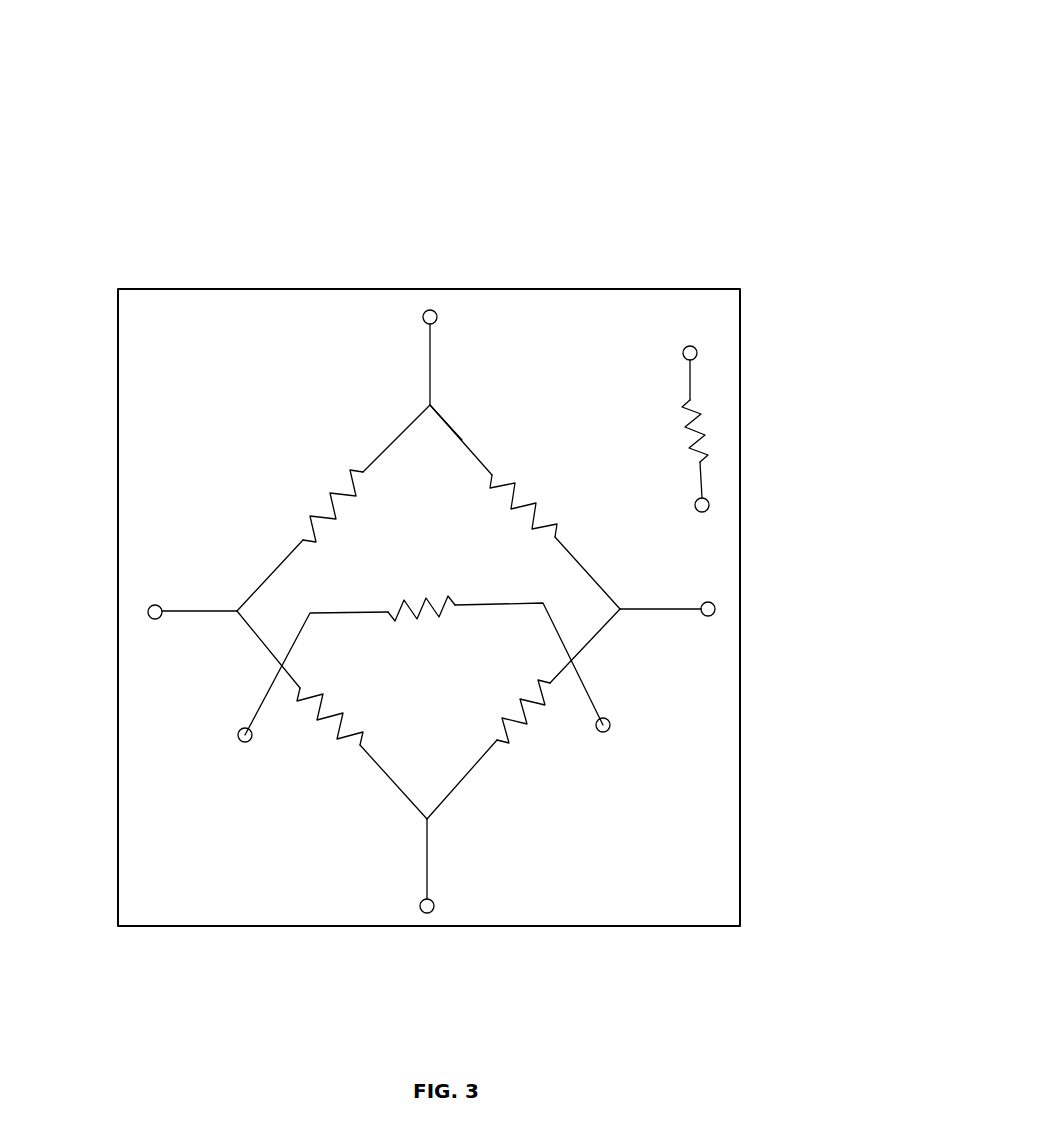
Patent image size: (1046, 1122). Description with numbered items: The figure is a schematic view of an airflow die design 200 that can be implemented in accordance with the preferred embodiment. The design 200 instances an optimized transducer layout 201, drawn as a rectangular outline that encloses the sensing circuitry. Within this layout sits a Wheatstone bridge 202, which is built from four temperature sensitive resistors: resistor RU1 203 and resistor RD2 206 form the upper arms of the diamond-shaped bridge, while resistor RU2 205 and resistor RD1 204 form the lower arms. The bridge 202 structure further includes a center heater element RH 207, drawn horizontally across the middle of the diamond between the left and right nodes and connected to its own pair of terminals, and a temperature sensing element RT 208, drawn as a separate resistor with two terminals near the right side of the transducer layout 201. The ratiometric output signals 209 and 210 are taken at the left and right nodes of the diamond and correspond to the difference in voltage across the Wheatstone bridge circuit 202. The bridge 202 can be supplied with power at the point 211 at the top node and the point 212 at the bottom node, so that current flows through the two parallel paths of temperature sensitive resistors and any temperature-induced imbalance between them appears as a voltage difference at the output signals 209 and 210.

The airflow die design 200 is at (758, 63).
The optimized transducer layout 201 is at (709, 289).
The Wheatstone bridge 202 is at (462, 440).
The temperature sensitive resistor RU1 203 is at (320, 502).
The temperature sensitive resistor RD1 204 is at (527, 737).
The temperature sensitive resistor RU2 205 is at (360, 746).
The temperature sensitive resistor RD2 206 is at (497, 477).
The center heater element RH 207 is at (448, 597).
The temperature sensing element RT 208 is at (703, 423).
The ratiometric output signal 209 is at (150, 606).
The ratiometric output signal 210 is at (712, 602).
The power supply point 211 is at (430, 310).
The power supply point 212 is at (434, 907).